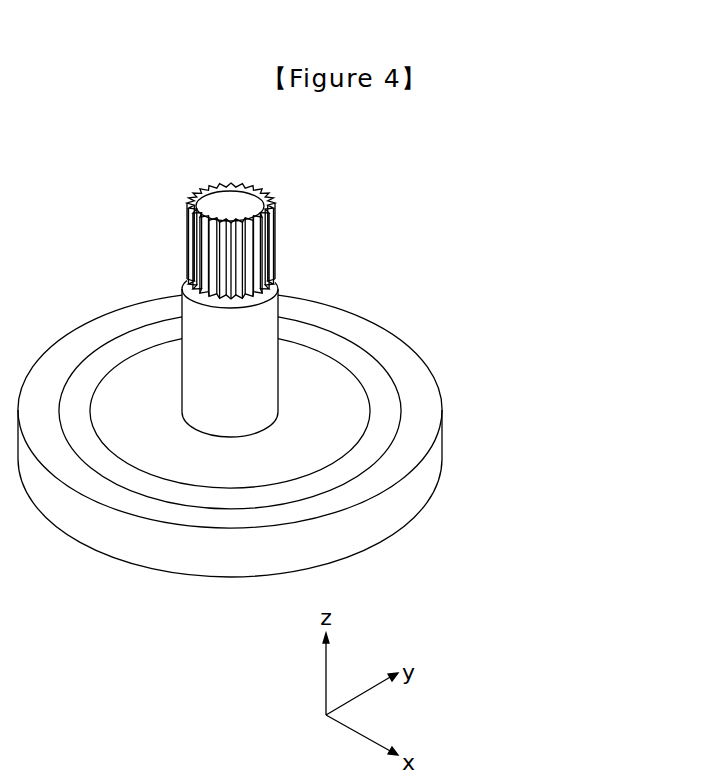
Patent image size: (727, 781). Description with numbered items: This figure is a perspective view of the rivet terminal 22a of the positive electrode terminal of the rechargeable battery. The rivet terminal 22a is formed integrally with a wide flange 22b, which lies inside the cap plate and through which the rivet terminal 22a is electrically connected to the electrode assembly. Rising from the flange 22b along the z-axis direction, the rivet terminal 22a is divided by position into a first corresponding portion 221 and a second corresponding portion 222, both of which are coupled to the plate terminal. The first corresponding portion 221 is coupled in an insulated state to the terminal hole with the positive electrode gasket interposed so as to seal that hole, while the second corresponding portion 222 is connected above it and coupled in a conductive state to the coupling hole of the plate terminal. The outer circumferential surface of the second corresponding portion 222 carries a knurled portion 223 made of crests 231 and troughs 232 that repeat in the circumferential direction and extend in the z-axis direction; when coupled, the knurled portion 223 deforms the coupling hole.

The rivet terminal 22a is at (350, 309).
The flange 22b is at (405, 502).
The first corresponding portion 221 is at (315, 392).
The second corresponding portion 222 is at (315, 207).
The knurled portion 223 is at (156, 240).
The crests 231 is at (185, 230).
The troughs 232 is at (188, 252).